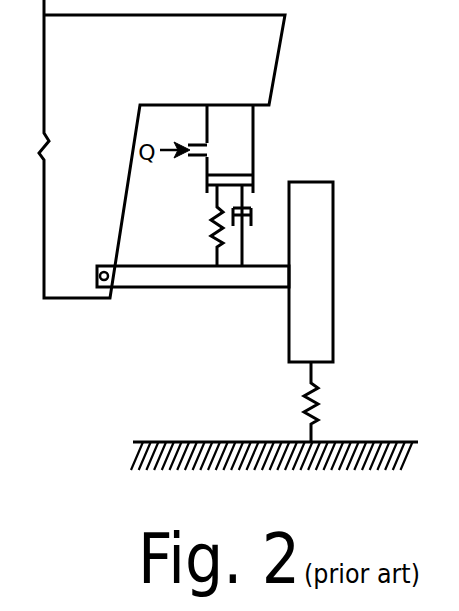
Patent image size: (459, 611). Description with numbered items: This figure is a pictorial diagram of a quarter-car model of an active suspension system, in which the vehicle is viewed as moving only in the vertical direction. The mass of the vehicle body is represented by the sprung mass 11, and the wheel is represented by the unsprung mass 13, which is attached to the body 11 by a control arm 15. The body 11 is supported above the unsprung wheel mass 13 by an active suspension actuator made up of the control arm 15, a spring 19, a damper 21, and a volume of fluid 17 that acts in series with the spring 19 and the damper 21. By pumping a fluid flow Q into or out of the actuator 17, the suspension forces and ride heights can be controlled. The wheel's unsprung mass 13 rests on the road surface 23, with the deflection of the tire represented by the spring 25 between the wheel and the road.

The sprung mass 11 is at (281, 62).
The unsprung mass 13 is at (333, 212).
The control arm 15 is at (170, 289).
The volume of fluid 17 is at (253, 148).
The spring 19 is at (212, 213).
The damper 21 is at (252, 215).
The road surface 23 is at (222, 428).
The spring 25 is at (318, 401).